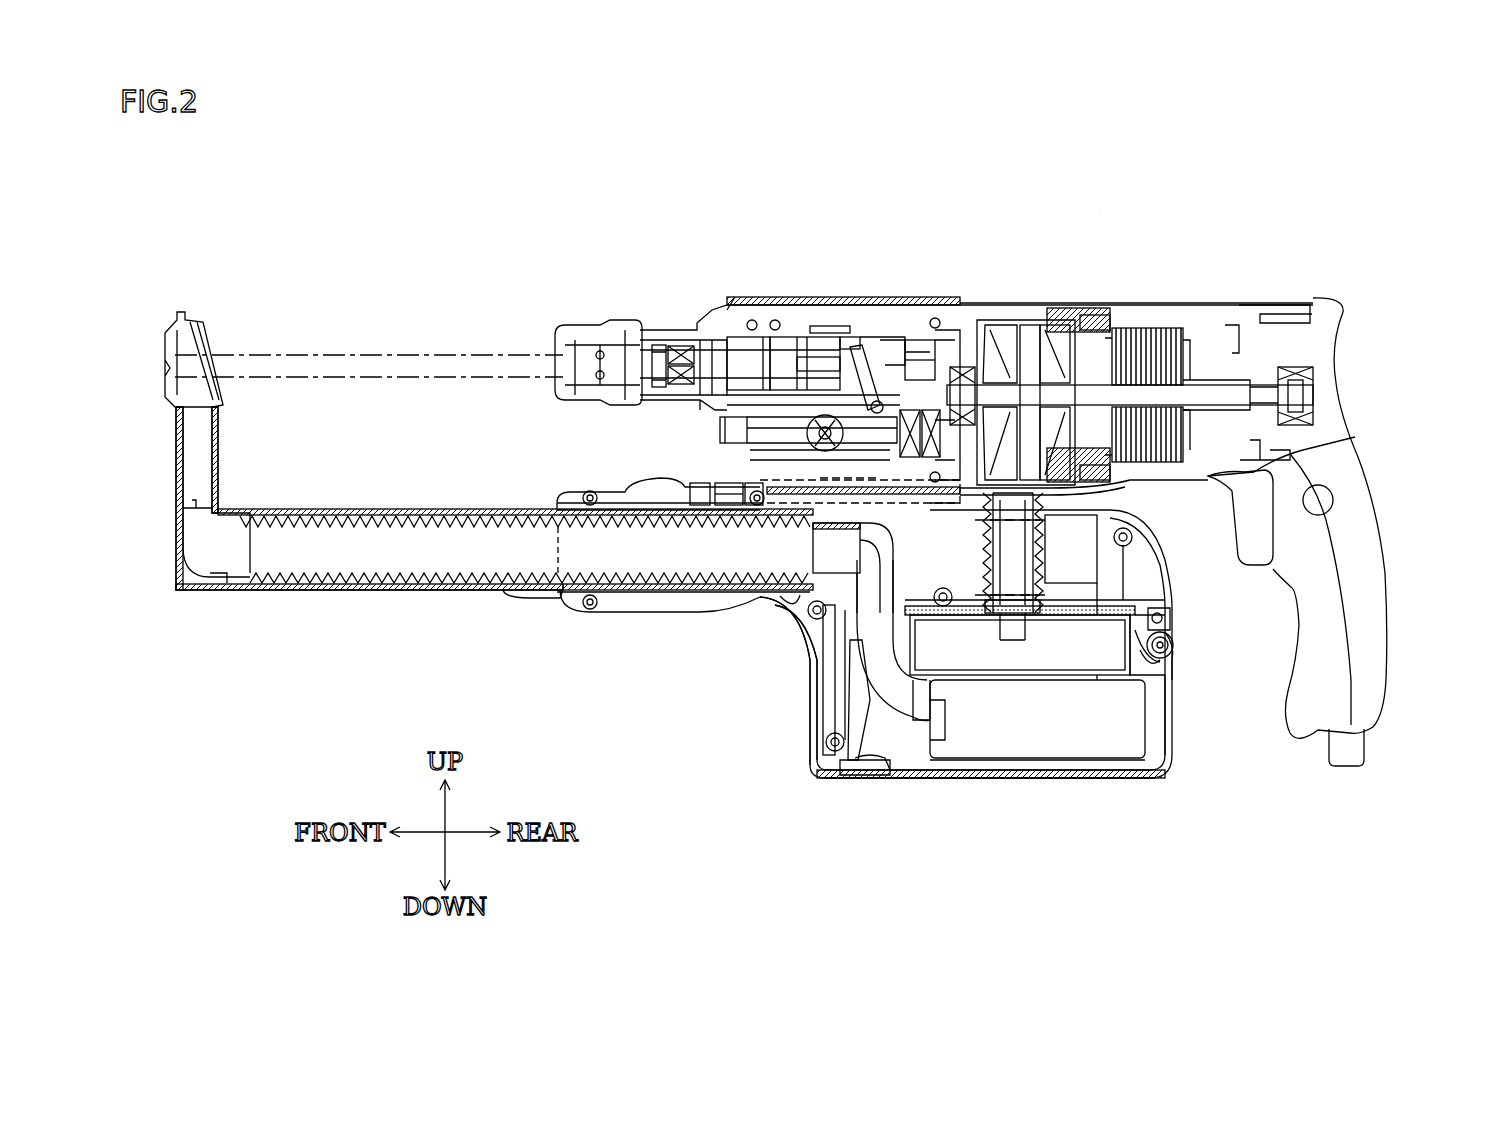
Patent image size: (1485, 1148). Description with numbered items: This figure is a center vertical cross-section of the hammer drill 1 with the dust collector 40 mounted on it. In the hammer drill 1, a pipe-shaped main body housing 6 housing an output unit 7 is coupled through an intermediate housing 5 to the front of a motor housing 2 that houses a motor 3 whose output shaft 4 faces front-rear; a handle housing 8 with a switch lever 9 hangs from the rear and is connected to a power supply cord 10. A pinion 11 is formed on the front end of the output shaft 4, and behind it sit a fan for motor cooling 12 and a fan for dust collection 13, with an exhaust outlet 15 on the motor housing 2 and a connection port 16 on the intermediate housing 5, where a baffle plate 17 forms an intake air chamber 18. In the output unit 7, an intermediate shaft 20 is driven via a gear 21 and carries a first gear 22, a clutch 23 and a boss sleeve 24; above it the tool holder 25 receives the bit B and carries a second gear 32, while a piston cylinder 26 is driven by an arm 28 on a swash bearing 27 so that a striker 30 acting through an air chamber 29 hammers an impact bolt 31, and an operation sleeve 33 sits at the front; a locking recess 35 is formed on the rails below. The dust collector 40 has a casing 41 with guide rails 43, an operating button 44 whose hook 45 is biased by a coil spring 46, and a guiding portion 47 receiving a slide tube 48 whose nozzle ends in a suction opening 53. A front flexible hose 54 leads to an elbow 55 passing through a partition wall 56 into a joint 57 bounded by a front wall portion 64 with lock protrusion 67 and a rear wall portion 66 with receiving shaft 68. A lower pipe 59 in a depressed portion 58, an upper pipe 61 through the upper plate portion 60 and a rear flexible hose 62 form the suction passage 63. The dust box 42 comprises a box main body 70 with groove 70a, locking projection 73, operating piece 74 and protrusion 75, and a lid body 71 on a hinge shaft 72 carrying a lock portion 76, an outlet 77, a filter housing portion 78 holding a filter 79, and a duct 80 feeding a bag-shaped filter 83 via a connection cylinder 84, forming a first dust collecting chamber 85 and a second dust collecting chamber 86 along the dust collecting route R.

The hammer drill 1 is at (1112, 204).
The motor housing 2 is at (1180, 298).
The motor 3 is at (1140, 330).
The output shaft 4 is at (1045, 345).
The intermediate housing 5 is at (1000, 340).
The main body housing 6 is at (875, 350).
The output unit 7 is at (893, 327).
The handle housing 8 is at (1340, 423).
The switch lever 9 is at (1258, 542).
The power supply cord 10 is at (1358, 747).
The pinion 11 is at (935, 345).
The fan for motor cooling 12 is at (1055, 345).
The fan for dust collection 13 is at (962, 330).
The exhaust outlet 15 is at (1060, 497).
The connection port 16 is at (1135, 520).
The baffle plate 17 is at (1008, 340).
The intake air chamber 18 is at (1085, 345).
The intermediate shaft 20 is at (720, 430).
The gear 21 is at (935, 485).
The first gear 22 is at (735, 450).
The clutch 23 is at (780, 350).
The boss sleeve 24 is at (905, 345).
The tool holder 25 is at (690, 343).
The piston cylinder 26 is at (805, 350).
The swash bearing 27 is at (860, 350).
The arm 28 is at (845, 335).
The air chamber 29 is at (820, 360).
The striker 30 is at (757, 340).
The impact bolt 31 is at (660, 345).
The second gear 32 is at (725, 338).
The operation sleeve 33 is at (605, 330).
The locking recess 35 is at (772, 575).
The dust collector 40 is at (772, 718).
The casing 41 is at (800, 640).
The dust box 42 is at (1066, 800).
The guide rails 43 is at (835, 575).
The operating button 44 is at (725, 530).
The hook 45 is at (738, 525).
The coil spring 46 is at (730, 505).
The guiding portion 47 is at (605, 490).
The slide tube 48 is at (398, 510).
The suction opening 53 is at (205, 322).
The front flexible hose 54 is at (453, 518).
The elbow 55 is at (794, 642).
The partition wall 56 is at (1160, 605).
The joint 57 is at (835, 722).
The depressed portion 58 is at (1100, 655).
The lower pipe 59 is at (990, 712).
The upper plate portion 60 is at (1110, 508).
The upper pipe 61 is at (1018, 540).
The rear flexible hose 62 is at (985, 555).
The suction passage 63 is at (1015, 600).
The front wall portion 64 is at (840, 700).
The rear wall portion 66 is at (1160, 625).
The lock protrusion 67 is at (855, 775).
The receiving shaft 68 is at (1172, 645).
The box main body 70 is at (1168, 770).
The groove 70a is at (1180, 660).
The lid body 71 is at (1120, 603).
The hinge shaft 72 is at (1170, 615).
The locking projection 73 is at (845, 660).
The operating piece 74 is at (870, 770).
The protrusion 75 is at (845, 760).
The lock portion 76 is at (780, 713).
The outlet 77 is at (990, 620).
The filter housing portion 78 is at (1165, 665).
The filter 79 is at (1120, 662).
The duct 80 is at (905, 760).
The bag-shaped filter 83 is at (1000, 760).
The connection cylinder 84 is at (925, 745).
The first dust collecting chamber 85 is at (1038, 728).
The second dust collecting chamber 86 is at (1150, 711).
The bit B is at (390, 355).
The dust collecting route R is at (800, 563).